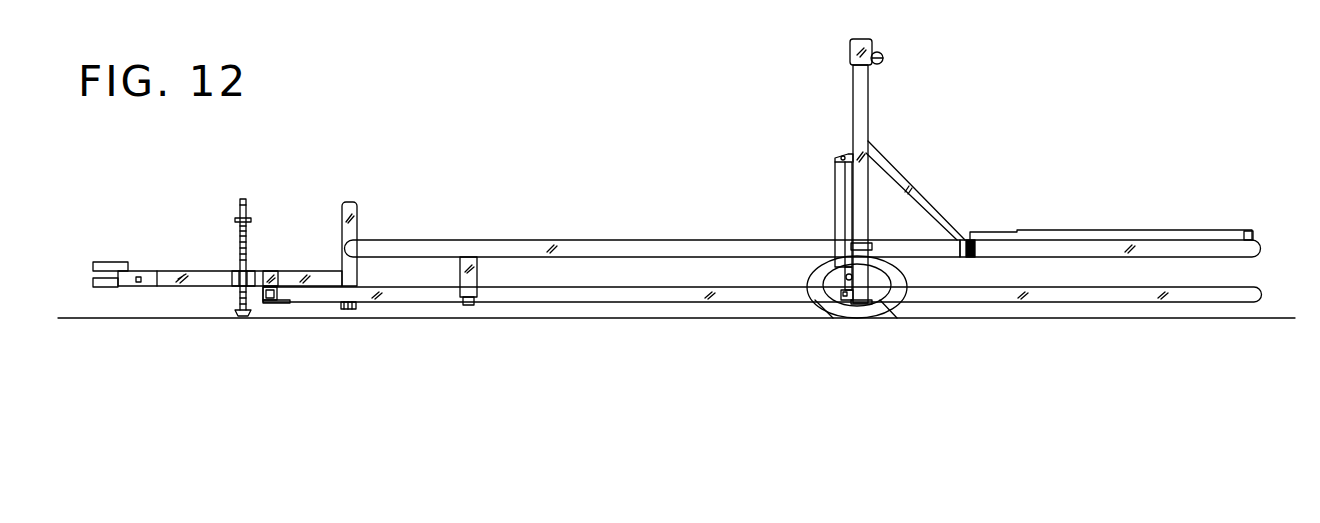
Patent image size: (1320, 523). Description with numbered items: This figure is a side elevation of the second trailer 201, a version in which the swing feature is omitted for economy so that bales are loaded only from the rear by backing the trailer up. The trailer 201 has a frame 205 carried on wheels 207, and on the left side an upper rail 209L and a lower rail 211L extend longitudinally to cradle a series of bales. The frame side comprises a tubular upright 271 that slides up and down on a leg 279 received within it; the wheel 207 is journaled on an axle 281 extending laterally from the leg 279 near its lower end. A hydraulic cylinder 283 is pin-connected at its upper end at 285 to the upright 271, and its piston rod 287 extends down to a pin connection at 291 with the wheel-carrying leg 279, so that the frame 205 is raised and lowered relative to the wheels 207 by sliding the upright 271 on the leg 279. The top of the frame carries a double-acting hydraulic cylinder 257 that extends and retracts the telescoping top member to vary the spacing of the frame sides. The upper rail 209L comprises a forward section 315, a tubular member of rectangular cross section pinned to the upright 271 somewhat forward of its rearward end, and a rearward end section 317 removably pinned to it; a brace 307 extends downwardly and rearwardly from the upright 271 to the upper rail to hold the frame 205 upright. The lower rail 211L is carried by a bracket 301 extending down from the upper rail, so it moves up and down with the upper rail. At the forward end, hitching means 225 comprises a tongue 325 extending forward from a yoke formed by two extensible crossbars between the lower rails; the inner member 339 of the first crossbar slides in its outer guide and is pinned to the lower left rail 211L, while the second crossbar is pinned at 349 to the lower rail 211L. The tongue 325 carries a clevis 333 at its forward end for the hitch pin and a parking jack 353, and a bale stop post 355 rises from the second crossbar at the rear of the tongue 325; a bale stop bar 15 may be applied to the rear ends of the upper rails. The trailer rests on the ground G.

The ground surface G is at (450, 318).
The bale stop bar 15 is at (1122, 232).
The trailer 201 is at (1116, 215).
The frame 205 is at (923, 151).
The wheels 207 is at (893, 303).
The upper left-hand rail 209L is at (653, 211).
The lower left-hand rail 211L is at (598, 302).
The hitching means 225 is at (219, 280).
The double-acting hydraulic cylinder 257 is at (885, 56).
The upright 271 is at (860, 118).
The leg 279 is at (862, 304).
The axle 281 is at (880, 270).
The hydraulic cylinder 283 is at (835, 195).
The pin connection 285 is at (838, 162).
The piston rod 287 is at (843, 272).
The pin connection 291 is at (835, 303).
The bracket 301 is at (484, 268).
The brace 307 is at (905, 190).
The forward section 315 is at (422, 250).
The rearward end section 317 is at (1090, 255).
The tongue 325 is at (180, 287).
The clevis 333 is at (112, 262).
The inner member 339 is at (267, 303).
The pin 349 is at (348, 309).
The parking jack 353 is at (246, 229).
The post 355 is at (350, 203).